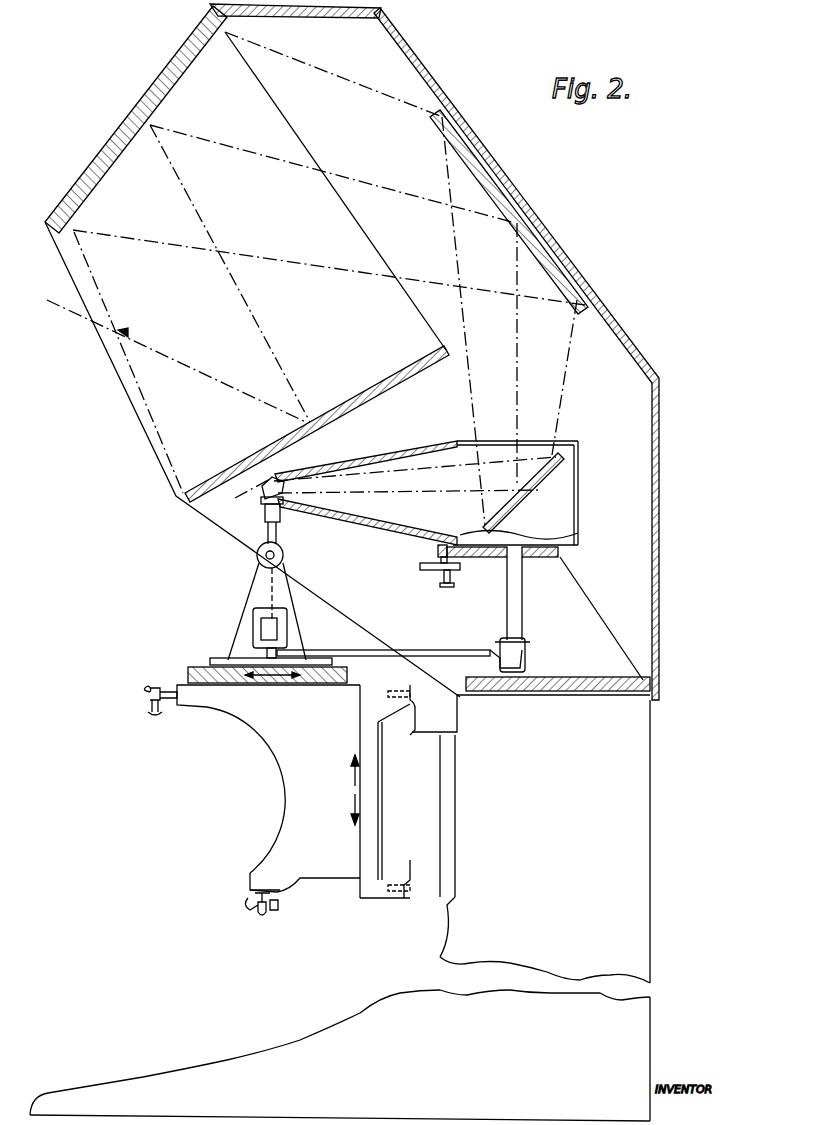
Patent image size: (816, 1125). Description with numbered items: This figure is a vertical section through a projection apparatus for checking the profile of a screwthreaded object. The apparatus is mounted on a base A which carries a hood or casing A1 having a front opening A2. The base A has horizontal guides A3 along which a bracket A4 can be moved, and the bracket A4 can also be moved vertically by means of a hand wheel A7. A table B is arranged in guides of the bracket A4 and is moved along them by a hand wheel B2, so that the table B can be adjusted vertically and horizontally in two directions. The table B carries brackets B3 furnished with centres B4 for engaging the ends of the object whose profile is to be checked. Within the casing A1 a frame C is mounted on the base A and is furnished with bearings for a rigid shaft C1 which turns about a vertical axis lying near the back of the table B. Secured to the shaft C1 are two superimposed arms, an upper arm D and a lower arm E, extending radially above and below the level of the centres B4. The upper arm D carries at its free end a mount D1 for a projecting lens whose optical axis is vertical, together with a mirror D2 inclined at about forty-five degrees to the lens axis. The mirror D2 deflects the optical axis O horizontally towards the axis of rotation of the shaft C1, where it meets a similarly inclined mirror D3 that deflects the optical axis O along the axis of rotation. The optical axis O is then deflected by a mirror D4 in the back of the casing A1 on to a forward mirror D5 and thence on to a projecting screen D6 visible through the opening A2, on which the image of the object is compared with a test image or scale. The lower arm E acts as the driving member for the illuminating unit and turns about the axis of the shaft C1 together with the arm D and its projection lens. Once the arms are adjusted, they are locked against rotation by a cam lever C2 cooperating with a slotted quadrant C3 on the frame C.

The base A is at (642, 922).
The hood or casing A1 is at (624, 338).
The front opening A2 is at (102, 348).
The horizontal guides A3 is at (393, 713).
The bracket A4 is at (300, 800).
The hand wheel A7 is at (250, 910).
The table B is at (197, 667).
The hand wheel B2 is at (150, 688).
The brackets B3 is at (247, 610).
The centres B4 is at (256, 554).
The frame C is at (563, 584).
The rigid shaft C1 is at (509, 618).
The cam lever C2 is at (422, 572).
The slotted quadrant C3 is at (438, 553).
The upper arm D is at (400, 532).
The lens mount D1 is at (281, 517).
The mirror D2 is at (262, 490).
The mirror D3 is at (578, 489).
The mirror D4 is at (524, 208).
The forward mirror D5 is at (143, 122).
The projecting screen D6 is at (245, 457).
The lower arm E is at (413, 651).
The optical axis O is at (247, 282).